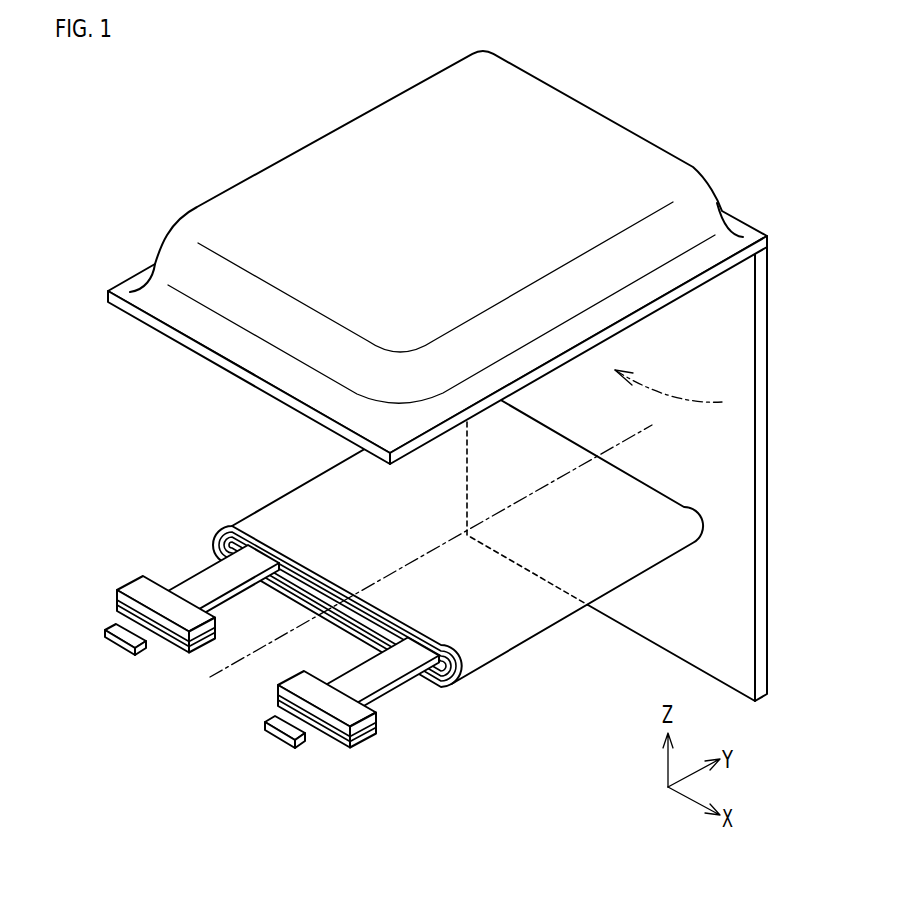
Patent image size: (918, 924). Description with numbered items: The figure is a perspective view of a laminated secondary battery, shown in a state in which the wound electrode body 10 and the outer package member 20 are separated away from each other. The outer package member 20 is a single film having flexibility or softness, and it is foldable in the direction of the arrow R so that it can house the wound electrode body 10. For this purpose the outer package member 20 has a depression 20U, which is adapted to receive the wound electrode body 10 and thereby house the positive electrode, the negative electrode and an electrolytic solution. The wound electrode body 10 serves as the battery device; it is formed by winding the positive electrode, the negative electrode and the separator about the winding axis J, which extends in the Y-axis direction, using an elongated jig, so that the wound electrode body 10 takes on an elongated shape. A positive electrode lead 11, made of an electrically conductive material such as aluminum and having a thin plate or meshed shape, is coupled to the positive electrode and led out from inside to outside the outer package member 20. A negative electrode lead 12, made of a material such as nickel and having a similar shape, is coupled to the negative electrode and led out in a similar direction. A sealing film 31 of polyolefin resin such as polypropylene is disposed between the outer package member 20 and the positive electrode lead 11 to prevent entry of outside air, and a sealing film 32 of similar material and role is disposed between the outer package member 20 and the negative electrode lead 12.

The wound electrode body 10 is at (263, 468).
The positive electrode lead 11 is at (128, 632).
The negative electrode lead 12 is at (287, 724).
The outer package member 20 is at (582, 127).
The depression 20U is at (333, 157).
The sealing film 31 is at (137, 590).
The sealing film 32 is at (373, 732).
The winding axis J is at (231, 668).
The arrow R is at (668, 394).